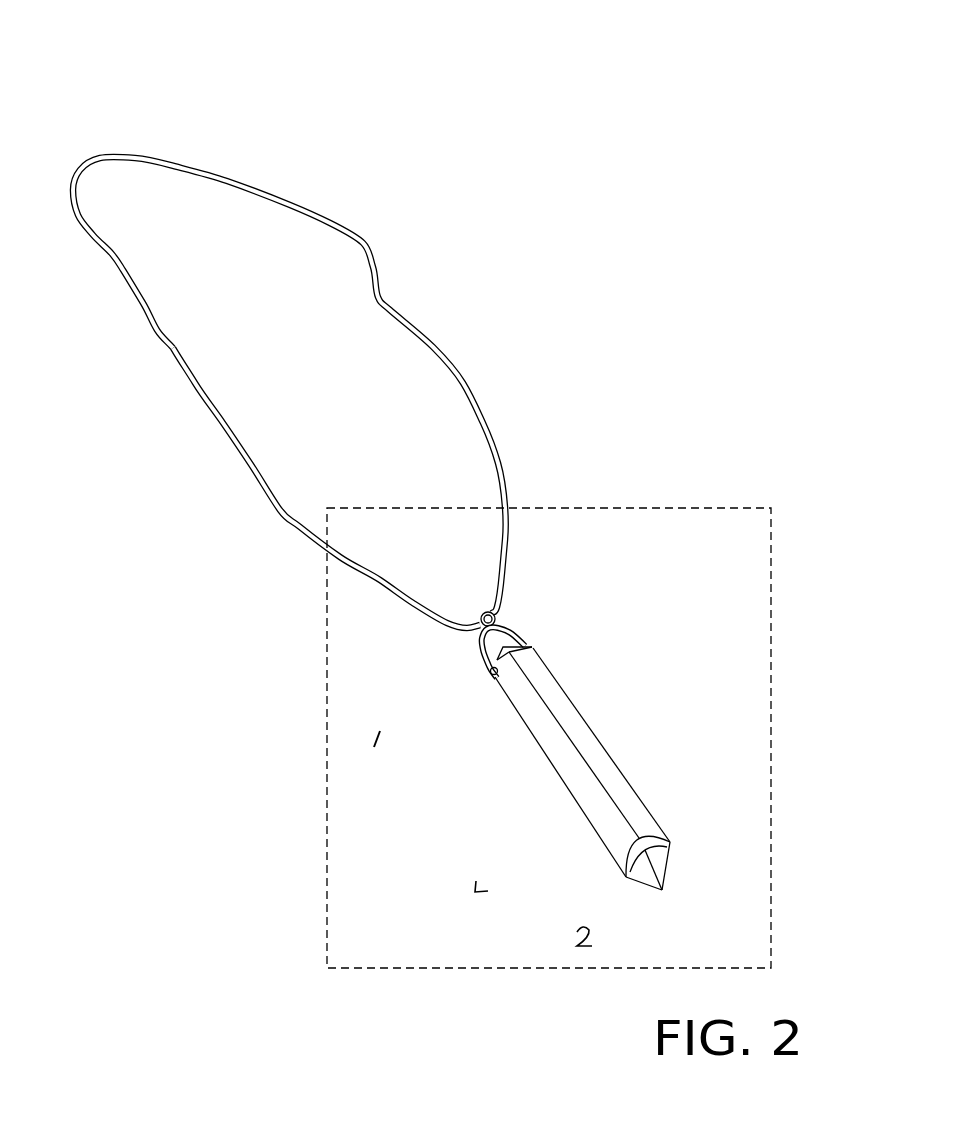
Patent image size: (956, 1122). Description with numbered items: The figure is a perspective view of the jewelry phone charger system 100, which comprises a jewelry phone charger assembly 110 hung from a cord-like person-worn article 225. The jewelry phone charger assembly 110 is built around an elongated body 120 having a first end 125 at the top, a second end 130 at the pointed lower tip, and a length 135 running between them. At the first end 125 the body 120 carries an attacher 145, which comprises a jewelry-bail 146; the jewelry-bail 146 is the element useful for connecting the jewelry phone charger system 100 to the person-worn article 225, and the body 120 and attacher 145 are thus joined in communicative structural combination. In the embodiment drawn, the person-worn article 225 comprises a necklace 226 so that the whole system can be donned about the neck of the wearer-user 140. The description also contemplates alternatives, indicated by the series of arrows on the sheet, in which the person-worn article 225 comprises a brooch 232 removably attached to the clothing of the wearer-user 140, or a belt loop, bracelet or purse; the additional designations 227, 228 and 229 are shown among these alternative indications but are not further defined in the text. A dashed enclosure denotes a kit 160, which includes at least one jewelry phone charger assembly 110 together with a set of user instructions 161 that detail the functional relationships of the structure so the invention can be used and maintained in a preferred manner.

The jewelry phone charger system 100 is at (551, 53).
The jewelry phone charger assembly 110 is at (567, 98).
The body 120 is at (543, 724).
The first end 125 is at (479, 685).
The second end 130 is at (603, 873).
The length 135 is at (561, 791).
The wearer-user 140 is at (582, 146).
The attacher 145 is at (505, 615).
The jewelry-bail 146 is at (524, 632).
The kit 160 is at (646, 608).
The set of user instructions 161 is at (601, 195).
The person-worn article 225 is at (141, 307).
The necklace 226 is at (193, 397).
The cord portion 227 is at (617, 243).
The cord portion 228 is at (635, 288).
The cord portion 229 is at (650, 338).
The brooch 232 is at (665, 383).